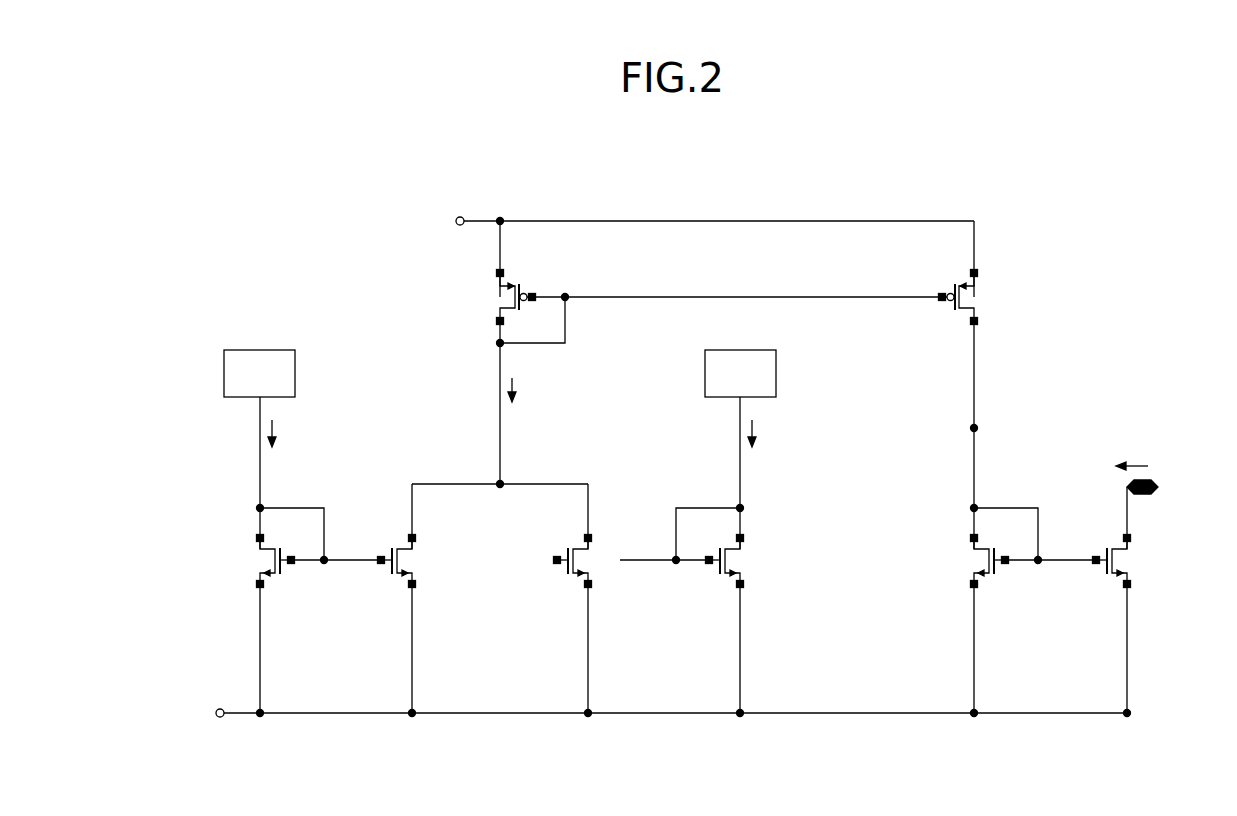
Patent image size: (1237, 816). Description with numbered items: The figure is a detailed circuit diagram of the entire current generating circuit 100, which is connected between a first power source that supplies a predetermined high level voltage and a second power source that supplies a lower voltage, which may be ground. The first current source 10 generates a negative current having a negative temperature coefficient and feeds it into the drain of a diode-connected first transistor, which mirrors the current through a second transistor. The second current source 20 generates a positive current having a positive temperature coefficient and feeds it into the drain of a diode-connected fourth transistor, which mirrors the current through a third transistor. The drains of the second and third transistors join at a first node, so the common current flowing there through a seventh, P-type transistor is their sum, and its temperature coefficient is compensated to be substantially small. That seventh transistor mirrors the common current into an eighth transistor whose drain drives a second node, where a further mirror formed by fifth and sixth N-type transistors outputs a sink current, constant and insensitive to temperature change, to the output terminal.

The current generating circuit 100 is at (1028, 215).
The first current source 10 is at (259, 373).
The second current source 20 is at (740, 373).